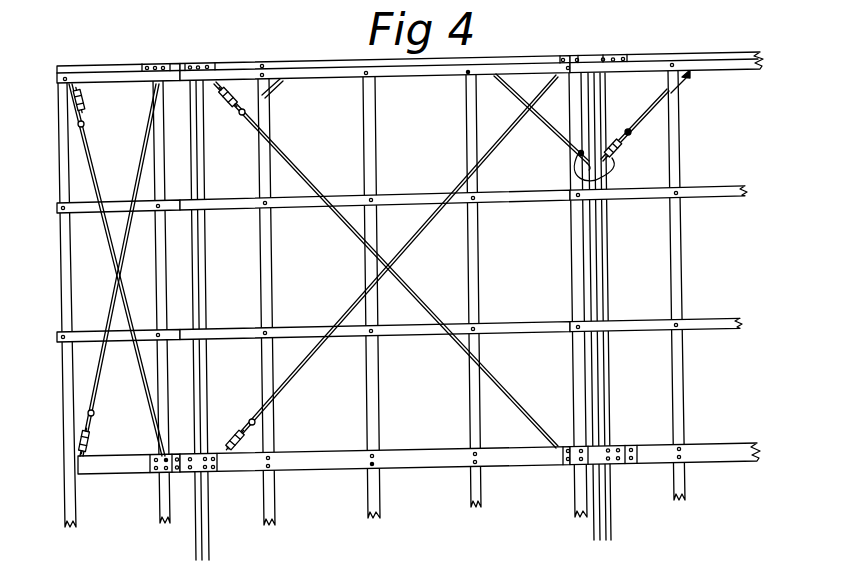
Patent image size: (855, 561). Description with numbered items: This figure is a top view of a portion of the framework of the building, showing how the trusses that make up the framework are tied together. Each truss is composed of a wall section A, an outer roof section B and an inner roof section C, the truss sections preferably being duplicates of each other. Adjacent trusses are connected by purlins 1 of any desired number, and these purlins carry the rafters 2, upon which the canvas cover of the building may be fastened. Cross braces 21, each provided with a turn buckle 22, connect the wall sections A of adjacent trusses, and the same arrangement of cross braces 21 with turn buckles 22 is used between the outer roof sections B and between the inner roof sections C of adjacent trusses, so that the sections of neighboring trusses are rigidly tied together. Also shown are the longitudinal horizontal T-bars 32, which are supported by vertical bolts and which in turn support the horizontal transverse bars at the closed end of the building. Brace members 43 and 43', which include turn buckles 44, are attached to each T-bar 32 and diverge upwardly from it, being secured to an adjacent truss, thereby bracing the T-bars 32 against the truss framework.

The purlin 1 is at (268, 286).
The rafter 2 is at (313, 205).
The cross brace 21 is at (141, 361).
The turn buckle 22 is at (82, 99).
The longitudinal horizontal T-bar 32 is at (206, 531).
The brace member 43 is at (635, 117).
The diagonal tie brace 43' is at (542, 122).
The turn buckle 44 is at (608, 153).
The wall section A is at (117, 78).
The outer roof section B is at (420, 73).
The inner roof section C is at (718, 62).